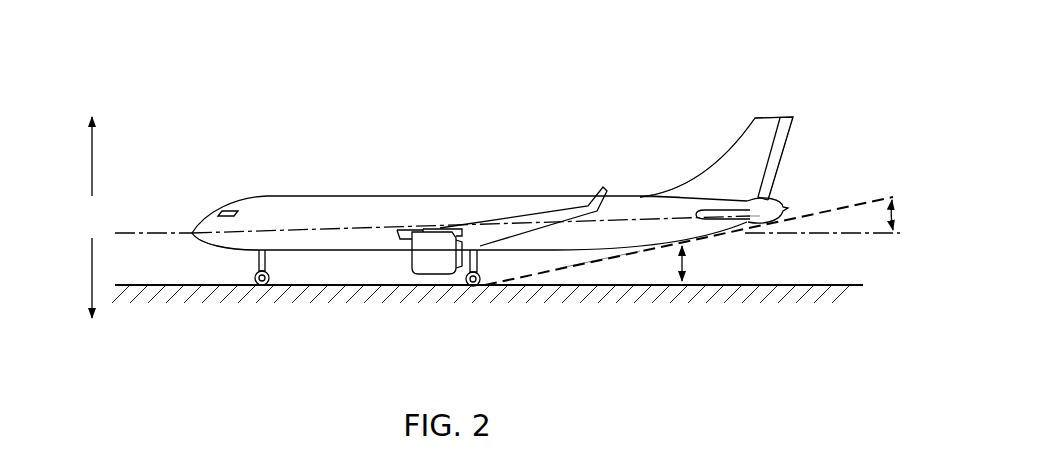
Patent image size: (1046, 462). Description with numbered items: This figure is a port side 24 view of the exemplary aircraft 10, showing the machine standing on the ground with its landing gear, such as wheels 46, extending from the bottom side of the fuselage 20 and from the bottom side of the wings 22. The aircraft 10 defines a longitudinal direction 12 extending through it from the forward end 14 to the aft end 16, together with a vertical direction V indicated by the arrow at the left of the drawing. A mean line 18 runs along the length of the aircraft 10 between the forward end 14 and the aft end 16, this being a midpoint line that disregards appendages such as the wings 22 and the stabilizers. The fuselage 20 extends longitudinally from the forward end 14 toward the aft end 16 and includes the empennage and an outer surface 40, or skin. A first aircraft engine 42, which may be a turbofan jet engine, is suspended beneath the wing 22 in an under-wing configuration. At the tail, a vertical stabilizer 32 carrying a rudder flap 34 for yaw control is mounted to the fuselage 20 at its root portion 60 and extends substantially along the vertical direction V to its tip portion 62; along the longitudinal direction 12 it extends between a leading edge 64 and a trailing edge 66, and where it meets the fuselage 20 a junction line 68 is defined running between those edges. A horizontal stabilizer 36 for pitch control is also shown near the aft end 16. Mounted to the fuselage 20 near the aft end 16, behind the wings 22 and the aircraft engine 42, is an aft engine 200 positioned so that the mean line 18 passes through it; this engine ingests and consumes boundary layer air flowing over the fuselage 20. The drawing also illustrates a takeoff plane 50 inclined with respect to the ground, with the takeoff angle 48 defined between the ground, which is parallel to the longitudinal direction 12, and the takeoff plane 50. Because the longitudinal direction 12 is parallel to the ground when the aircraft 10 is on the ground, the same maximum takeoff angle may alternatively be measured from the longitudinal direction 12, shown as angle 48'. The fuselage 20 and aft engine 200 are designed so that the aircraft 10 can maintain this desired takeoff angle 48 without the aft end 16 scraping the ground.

The aircraft 10 is at (243, 163).
The longitudinal direction 12 is at (133, 228).
The forward end 14 is at (196, 252).
The aft end 16 is at (803, 214).
The mean line 18 is at (313, 228).
The fuselage 20 is at (278, 246).
The wings 22 is at (547, 217).
The port side 24 is at (574, 246).
The vertical stabilizer 32 is at (752, 148).
The rudder flap 34 is at (795, 127).
The horizontal stabilizers 36 is at (742, 224).
The outer surface 40 is at (416, 189).
The first aircraft engine 42 is at (417, 273).
The wheels 46 is at (473, 288).
The takeoff angle 48 is at (700, 301).
The angle 48' is at (902, 253).
The takeoff plane 50 is at (588, 262).
The root portion 60 is at (697, 187).
The tip portion 62 is at (774, 106).
The leading edge 64 is at (716, 122).
The trailing edge 66 is at (797, 143).
The junction line 68 is at (677, 195).
The aft engine 200 is at (776, 190).
The vertical direction V is at (92, 217).